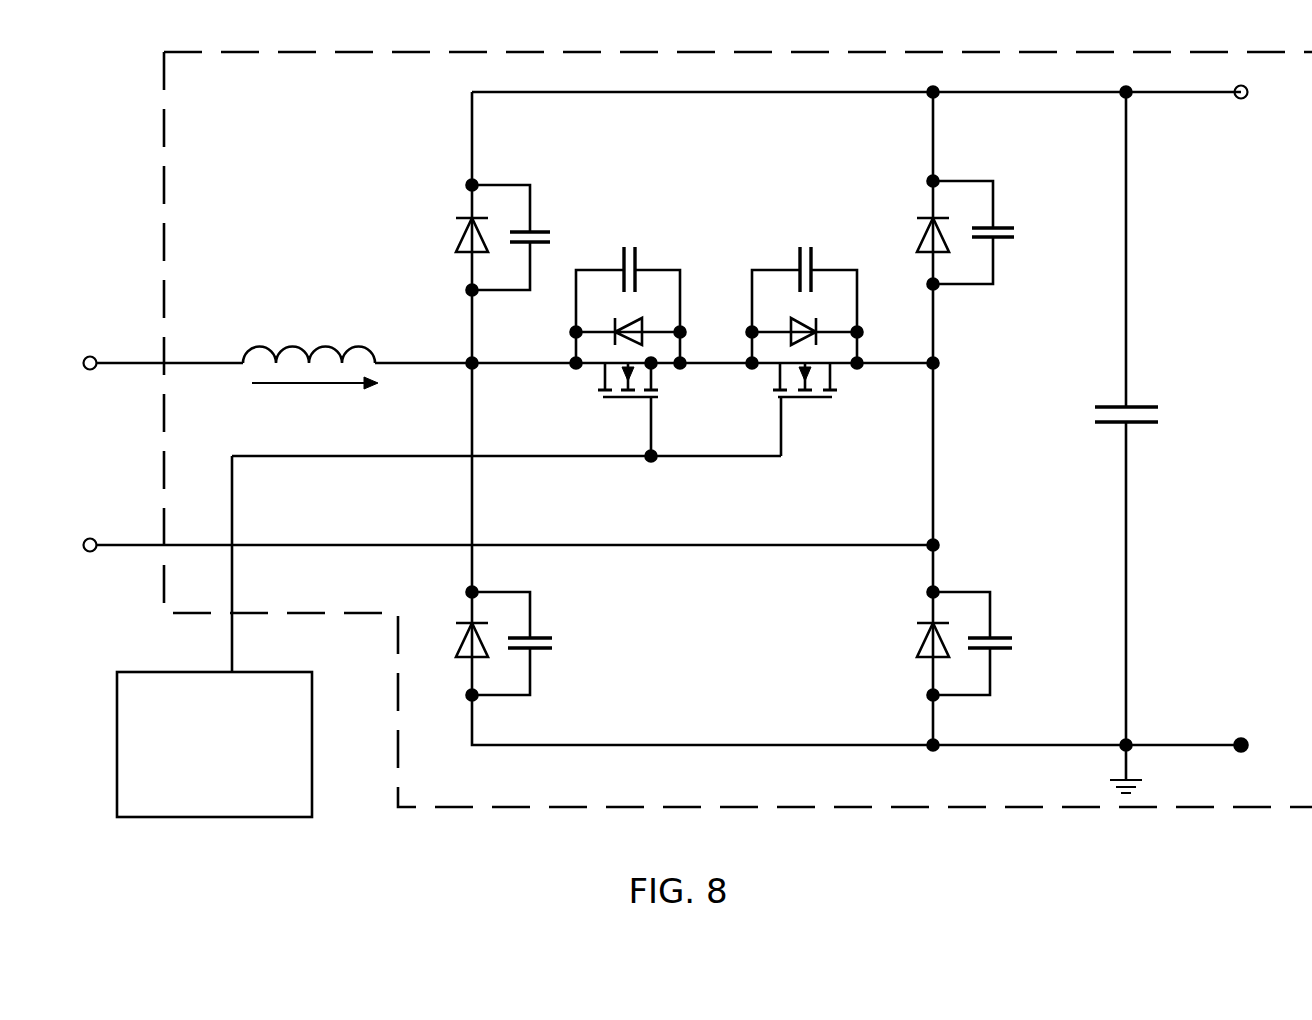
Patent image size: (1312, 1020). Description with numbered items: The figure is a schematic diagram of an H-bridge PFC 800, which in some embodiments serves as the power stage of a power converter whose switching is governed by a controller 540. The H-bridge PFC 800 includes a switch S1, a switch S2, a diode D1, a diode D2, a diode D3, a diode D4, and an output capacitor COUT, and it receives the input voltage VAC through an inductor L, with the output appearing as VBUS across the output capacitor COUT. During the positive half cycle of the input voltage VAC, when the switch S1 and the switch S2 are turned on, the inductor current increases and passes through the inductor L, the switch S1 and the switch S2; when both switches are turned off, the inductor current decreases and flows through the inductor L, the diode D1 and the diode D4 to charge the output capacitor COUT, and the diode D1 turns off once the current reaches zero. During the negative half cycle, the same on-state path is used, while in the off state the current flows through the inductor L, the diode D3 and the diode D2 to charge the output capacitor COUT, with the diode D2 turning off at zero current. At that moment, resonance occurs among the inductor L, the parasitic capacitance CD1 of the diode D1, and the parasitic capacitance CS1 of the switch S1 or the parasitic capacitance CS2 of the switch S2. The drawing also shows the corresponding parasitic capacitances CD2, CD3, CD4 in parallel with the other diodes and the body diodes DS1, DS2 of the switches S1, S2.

The H-bridge PFC 800 is at (160, 178).
The controller 540 is at (214, 636).
The inductor L is at (357, 349).
The diode D1 is at (458, 238).
The diode D2 is at (454, 644).
The diode D3 is at (916, 233).
The diode D4 is at (911, 644).
The parasitic capacitance of the diode D1 CD1 is at (534, 237).
The diode capacitor CD2 is at (536, 643).
The diode capacitor CD3 is at (998, 232).
The diode capacitor CD4 is at (997, 643).
The parasitic capacitance of the switch S1 CS1 is at (628, 294).
The parasitic capacitance of the switch S2 CS2 is at (804, 294).
The switch diode DS1 is at (628, 331).
The switch diode DS2 is at (805, 331).
The switch S1 is at (590, 390).
The switch S2 is at (770, 388).
The output capacitor COUT is at (1092, 414).
The input voltage VAC is at (503, 454).
The bus voltage VBUS is at (1248, 420).